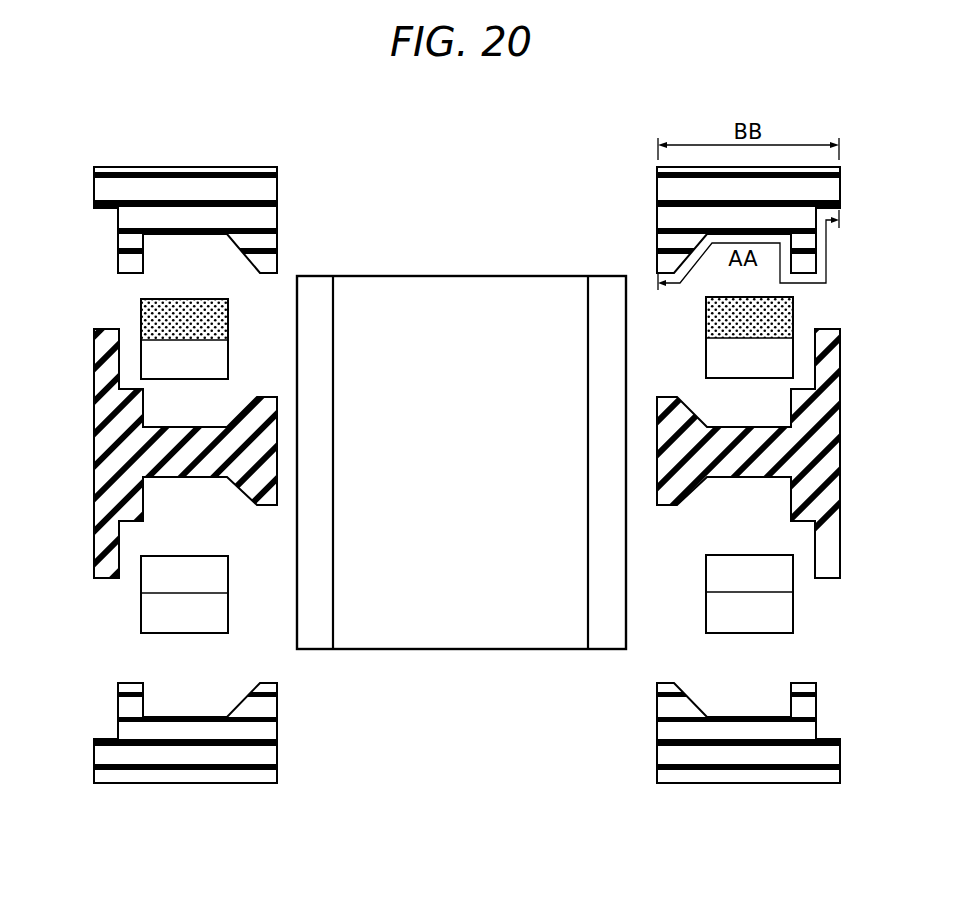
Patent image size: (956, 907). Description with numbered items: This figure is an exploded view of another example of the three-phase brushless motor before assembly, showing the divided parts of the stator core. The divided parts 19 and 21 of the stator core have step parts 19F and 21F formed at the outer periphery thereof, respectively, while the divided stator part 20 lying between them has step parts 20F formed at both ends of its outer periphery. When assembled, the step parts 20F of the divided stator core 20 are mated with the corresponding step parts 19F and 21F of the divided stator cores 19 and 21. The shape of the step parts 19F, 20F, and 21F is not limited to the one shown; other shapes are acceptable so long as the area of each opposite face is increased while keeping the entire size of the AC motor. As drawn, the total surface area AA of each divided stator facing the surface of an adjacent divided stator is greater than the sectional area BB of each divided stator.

The divided stator core 19 is at (262, 227).
The step part 19F is at (103, 223).
The divided stator part 20 is at (253, 455).
The step parts 20F is at (130, 367).
The divided stator core 21 is at (253, 733).
The step part 21F is at (103, 712).